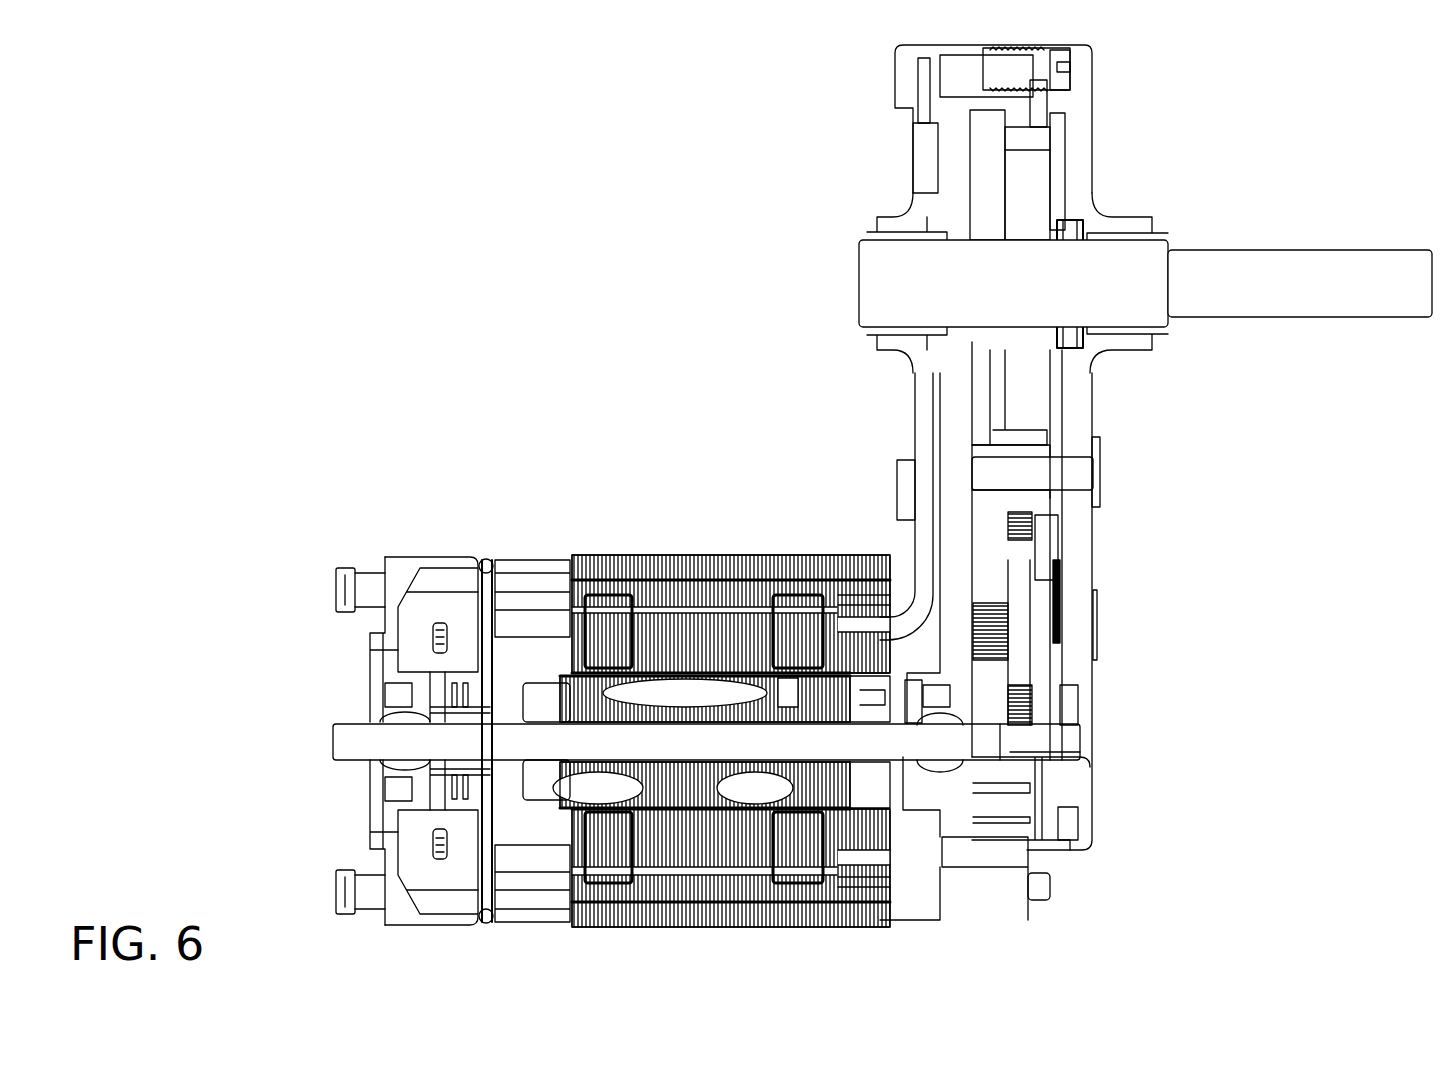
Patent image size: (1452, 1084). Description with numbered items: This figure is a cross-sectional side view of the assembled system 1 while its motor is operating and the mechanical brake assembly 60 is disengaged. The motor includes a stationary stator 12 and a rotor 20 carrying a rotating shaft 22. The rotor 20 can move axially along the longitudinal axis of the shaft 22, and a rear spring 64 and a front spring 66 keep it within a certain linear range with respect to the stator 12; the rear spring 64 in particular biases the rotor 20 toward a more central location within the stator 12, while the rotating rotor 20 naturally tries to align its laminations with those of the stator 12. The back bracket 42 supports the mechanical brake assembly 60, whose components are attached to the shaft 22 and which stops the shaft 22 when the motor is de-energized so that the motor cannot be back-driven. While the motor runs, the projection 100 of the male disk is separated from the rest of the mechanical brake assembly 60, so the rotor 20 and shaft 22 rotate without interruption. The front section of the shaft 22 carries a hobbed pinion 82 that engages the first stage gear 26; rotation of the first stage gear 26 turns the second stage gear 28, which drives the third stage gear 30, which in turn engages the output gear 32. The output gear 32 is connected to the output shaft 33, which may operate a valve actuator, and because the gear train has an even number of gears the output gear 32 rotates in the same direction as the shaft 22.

The system 1 is at (604, 242).
The stator 12 is at (680, 555).
The rotor 20 is at (678, 797).
The shaft 22 is at (352, 735).
The first stage gear 26 is at (1042, 660).
The second stage gear 28 is at (1020, 588).
The third stage gear 30 is at (1030, 445).
The output gear 32 is at (1030, 172).
The output shaft 33 is at (1340, 270).
The back bracket 42 is at (400, 557).
The mechanical brake assembly 60 is at (438, 796).
The rear spring 64 is at (502, 722).
The front spring 66 is at (880, 762).
The hobbed pinion 82 is at (1065, 735).
The projection 100 is at (520, 787).